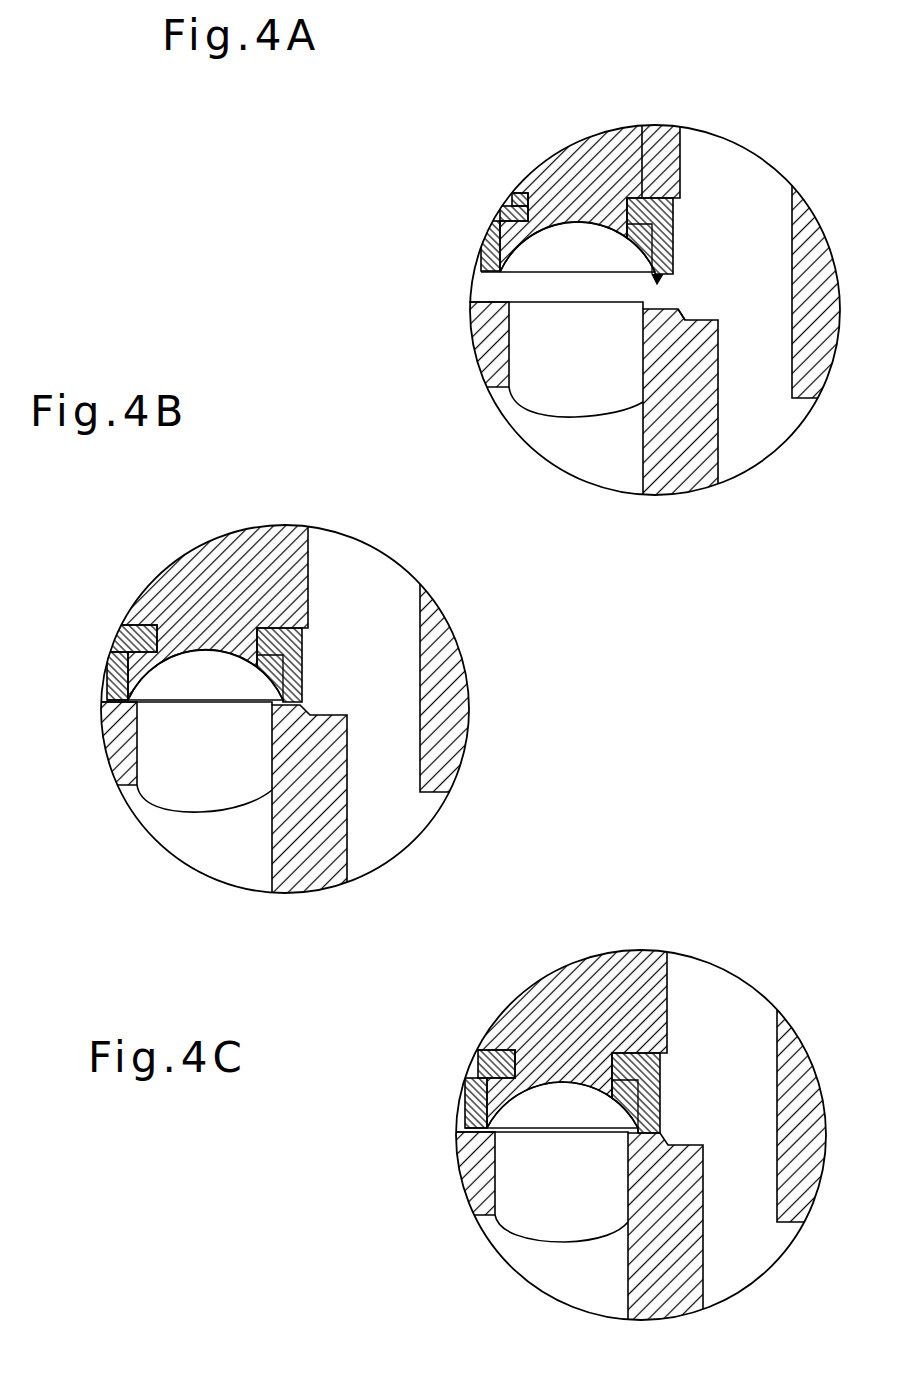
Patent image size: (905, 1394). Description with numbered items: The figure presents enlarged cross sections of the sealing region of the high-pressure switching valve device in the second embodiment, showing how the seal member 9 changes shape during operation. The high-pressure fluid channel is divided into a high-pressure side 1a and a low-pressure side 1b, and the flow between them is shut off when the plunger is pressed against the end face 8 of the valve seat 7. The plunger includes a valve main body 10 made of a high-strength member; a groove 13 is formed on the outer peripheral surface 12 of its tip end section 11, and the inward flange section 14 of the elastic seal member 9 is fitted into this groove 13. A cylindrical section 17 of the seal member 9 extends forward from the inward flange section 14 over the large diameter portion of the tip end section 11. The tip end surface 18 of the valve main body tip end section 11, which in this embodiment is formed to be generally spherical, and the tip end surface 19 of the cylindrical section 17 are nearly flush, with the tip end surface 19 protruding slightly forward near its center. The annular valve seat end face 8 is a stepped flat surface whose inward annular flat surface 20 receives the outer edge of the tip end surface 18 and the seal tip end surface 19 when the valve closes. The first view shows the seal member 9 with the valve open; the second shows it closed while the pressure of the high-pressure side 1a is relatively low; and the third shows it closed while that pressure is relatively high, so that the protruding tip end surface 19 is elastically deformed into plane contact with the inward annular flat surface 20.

In FIG. 4A, the high-pressure side 1a is at (750, 450).
In FIG. 4B, the high-pressure side 1a is at (367, 838).
In FIG. 4C, the high-pressure side 1a is at (747, 1248).
In FIG. 4A, the low-pressure side 1b is at (597, 470).
In FIG. 4B, the low-pressure side 1b is at (205, 840).
In FIG. 4C, the low-pressure side 1b is at (568, 1265).
In FIG. 4A, the valve seat 7 is at (729, 346).
In FIG. 4B, the valve seat 7 is at (350, 757).
In FIG. 4C, the valve seat 7 is at (706, 1172).
In FIG. 4A, the valve seat end face 8 is at (705, 316).
In FIG. 4A, the seal member 9 is at (749, 183).
In FIG. 4B, the seal member 9 is at (388, 614).
In FIG. 4C, the seal member 9 is at (733, 1034).
In FIG. 4A, the valve main body 10 is at (567, 166).
In FIG. 4B, the valve main body 10 is at (244, 550).
In FIG. 4C, the valve main body 10 is at (600, 979).
In FIG. 4A, the tip end section 11 is at (578, 177).
In FIG. 4B, the tip end section 11 is at (208, 640).
In FIG. 4C, the tip end section 11 is at (571, 1075).
In FIG. 4A, the outer peripheral surface 12 is at (481, 234).
In FIG. 4B, the outer peripheral surface 12 is at (108, 653).
In FIG. 4C, the outer peripheral surface 12 is at (465, 1103).
In FIG. 4A, the groove 13 is at (508, 203).
In FIG. 4A, the inward flange section 14 is at (648, 152).
In FIG. 4A, the cylindrical section 17 is at (675, 268).
In FIG. 4B, the cylindrical section 17 is at (304, 686).
In FIG. 4C, the cylindrical section 17 is at (662, 1100).
In FIG. 4A, the tip end surface 18 is at (558, 227).
In FIG. 4B, the tip end surface 18 is at (209, 640).
In FIG. 4C, the tip end surface 18 is at (571, 1075).
In FIG. 4A, the tip end surface 19 is at (650, 283).
In FIG. 4A, the inward annular flat surface 20 is at (661, 283).